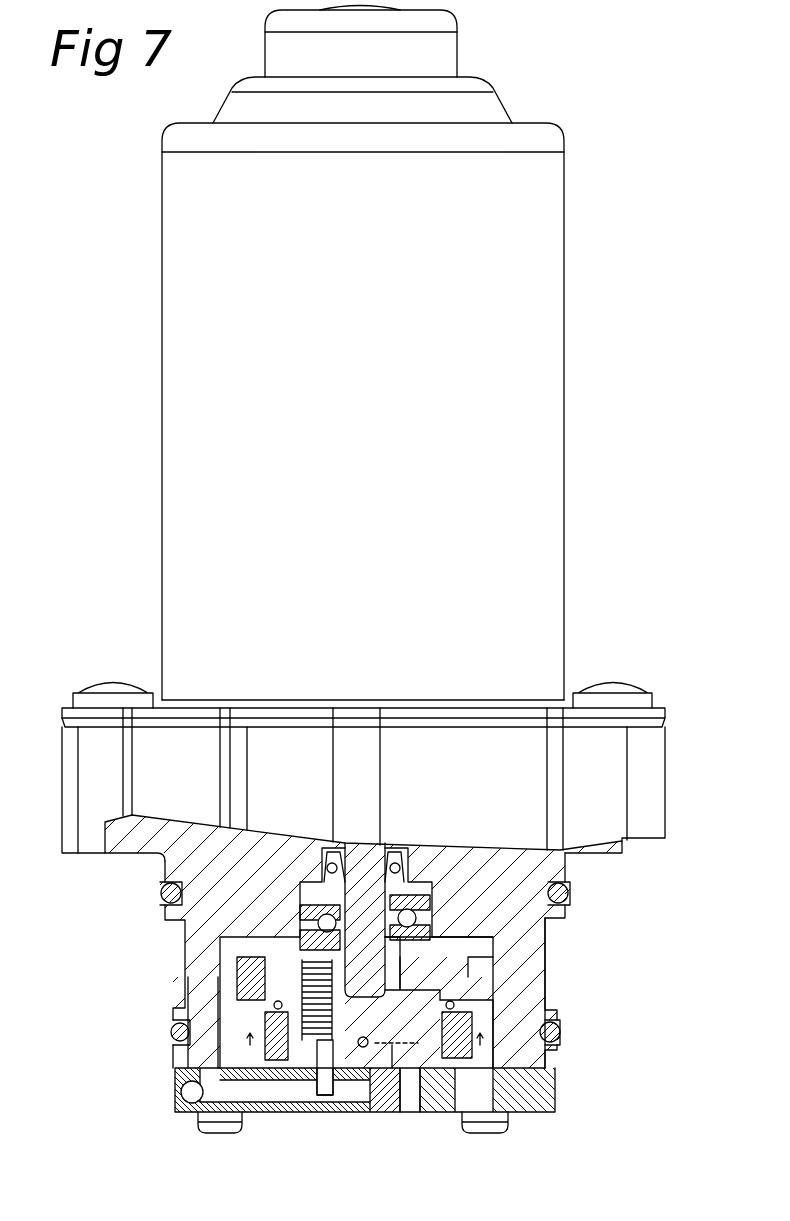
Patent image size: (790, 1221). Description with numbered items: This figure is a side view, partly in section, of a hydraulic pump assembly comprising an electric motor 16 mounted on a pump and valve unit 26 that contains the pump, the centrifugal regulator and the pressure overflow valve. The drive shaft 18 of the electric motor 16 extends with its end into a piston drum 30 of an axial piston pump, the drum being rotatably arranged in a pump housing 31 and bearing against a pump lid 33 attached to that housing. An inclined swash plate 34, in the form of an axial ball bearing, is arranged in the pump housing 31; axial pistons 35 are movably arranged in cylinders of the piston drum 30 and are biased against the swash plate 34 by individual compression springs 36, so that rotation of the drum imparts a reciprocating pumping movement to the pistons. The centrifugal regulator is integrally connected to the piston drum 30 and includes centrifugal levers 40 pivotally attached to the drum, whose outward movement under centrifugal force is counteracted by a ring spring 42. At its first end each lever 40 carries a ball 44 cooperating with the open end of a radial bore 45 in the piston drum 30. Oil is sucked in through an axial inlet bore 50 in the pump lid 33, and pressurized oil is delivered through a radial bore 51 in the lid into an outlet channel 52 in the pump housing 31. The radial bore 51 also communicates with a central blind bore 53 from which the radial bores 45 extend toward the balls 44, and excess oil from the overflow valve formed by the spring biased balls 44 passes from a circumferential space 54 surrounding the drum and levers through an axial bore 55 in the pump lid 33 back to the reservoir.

The electric motor 16 is at (160, 372).
The drive shaft 18 is at (375, 892).
The pump and valve unit 26 is at (158, 922).
The piston drum 30 is at (458, 977).
The pump housing 31 is at (523, 982).
The pump lid 33 is at (366, 1100).
The swash plate 34 is at (300, 910).
The axial pistons 35 is at (300, 952).
The compression springs 36 is at (300, 978).
The centrifugal lever 40 is at (265, 1045).
The ring spring 42 is at (447, 1005).
The ball 44 is at (457, 1050).
The radial bore 45 is at (392, 1050).
The axial inlet bore 50 is at (408, 1108).
The radial bore 51 is at (277, 1090).
The outlet channel 52 is at (205, 1035).
The central blind bore 53 is at (363, 1048).
The circumferential space 54 is at (477, 960).
The axial bore 55 is at (477, 1095).